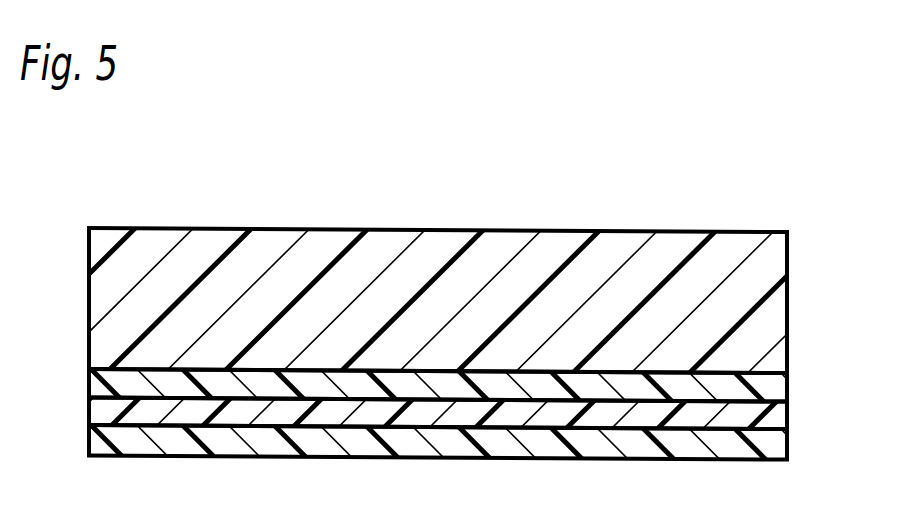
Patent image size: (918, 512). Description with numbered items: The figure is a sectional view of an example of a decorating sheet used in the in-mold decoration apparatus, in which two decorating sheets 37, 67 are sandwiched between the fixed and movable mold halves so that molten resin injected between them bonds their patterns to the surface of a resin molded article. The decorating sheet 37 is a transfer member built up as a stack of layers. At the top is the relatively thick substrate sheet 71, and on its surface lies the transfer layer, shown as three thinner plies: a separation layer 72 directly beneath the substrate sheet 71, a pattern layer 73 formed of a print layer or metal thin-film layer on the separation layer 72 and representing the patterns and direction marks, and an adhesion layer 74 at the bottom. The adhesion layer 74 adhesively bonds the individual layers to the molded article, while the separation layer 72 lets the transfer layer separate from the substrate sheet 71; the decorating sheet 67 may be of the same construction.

The decorating sheet 37 is at (700, 213).
The decorating sheet 67 is at (459, 297).
The substrate sheet 71 is at (777, 313).
The separation layer 72 is at (770, 385).
The pattern layer 73 is at (777, 417).
The adhesion layer 74 is at (767, 447).